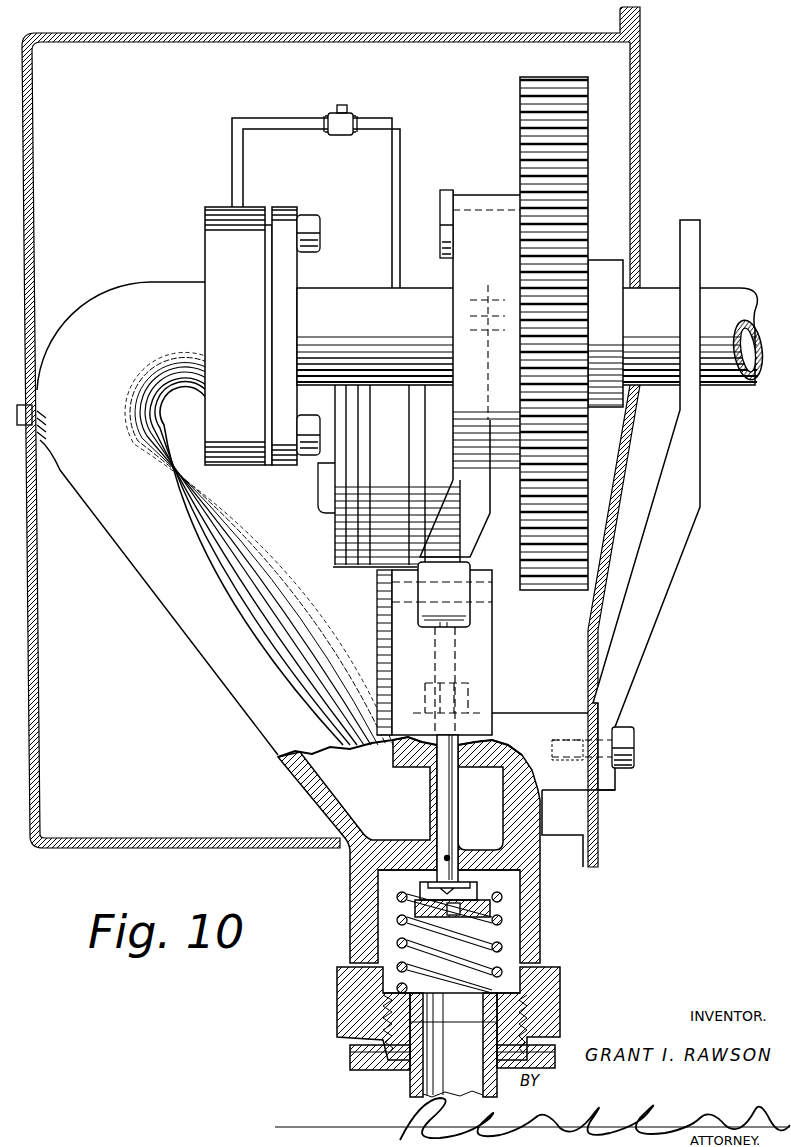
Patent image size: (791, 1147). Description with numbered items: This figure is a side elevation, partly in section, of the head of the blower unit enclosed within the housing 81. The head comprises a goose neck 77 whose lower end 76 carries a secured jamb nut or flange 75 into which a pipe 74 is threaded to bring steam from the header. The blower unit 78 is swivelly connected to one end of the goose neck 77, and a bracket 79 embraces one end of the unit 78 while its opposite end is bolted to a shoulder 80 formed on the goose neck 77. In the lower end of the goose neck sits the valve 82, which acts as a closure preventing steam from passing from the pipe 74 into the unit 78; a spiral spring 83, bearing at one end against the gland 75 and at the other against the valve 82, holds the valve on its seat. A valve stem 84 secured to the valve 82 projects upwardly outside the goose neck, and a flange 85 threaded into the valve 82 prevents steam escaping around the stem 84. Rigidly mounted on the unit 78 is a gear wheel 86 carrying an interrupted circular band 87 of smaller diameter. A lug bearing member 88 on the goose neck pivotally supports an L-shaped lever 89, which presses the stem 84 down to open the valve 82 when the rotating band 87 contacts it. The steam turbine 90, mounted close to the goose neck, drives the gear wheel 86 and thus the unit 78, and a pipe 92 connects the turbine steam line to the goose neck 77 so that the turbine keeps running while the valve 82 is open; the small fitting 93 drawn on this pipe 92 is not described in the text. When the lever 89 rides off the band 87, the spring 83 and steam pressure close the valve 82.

The pipe 74 is at (407, 1088).
The jamb nut or flange 75 is at (353, 1058).
The lower end of goose neck 76 is at (338, 990).
The goose neck 77 is at (163, 603).
The blower unit 78 is at (342, 295).
The bracket 79 is at (698, 462).
The shoulder 80 is at (563, 777).
The housing 81 is at (40, 728).
The valve 82 is at (402, 858).
The spiral spring 83 is at (493, 927).
The valve stem 84 is at (458, 663).
The flange 85 is at (407, 908).
The gear wheel 86 is at (587, 127).
The interrupted circular band 87 is at (482, 200).
The lug bearing member 88 is at (483, 683).
The L-shaped lever 89 is at (480, 548).
The steam turbine 90 is at (333, 535).
The pipe 92 is at (235, 166).
The valve 93 is at (337, 137).